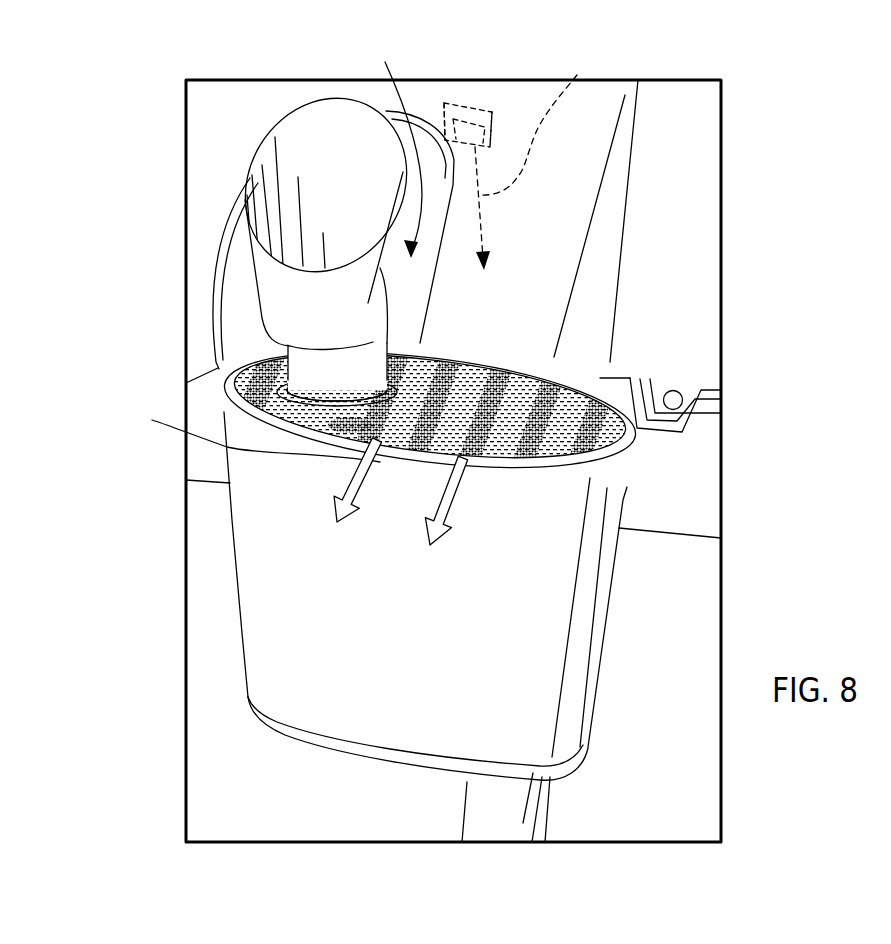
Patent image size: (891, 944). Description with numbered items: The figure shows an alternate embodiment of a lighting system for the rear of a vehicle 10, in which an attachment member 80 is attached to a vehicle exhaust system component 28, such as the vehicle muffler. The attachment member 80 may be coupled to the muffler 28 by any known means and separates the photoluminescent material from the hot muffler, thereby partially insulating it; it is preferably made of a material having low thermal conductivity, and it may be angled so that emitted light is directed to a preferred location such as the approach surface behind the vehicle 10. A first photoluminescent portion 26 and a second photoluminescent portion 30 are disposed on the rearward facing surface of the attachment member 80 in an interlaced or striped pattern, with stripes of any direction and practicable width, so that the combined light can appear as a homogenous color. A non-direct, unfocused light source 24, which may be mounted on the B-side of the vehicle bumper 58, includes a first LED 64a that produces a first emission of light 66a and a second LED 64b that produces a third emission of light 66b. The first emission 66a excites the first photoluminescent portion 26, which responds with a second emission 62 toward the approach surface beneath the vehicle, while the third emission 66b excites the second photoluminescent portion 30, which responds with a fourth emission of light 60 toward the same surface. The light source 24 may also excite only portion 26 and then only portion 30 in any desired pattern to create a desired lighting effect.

The vehicle 10 is at (152, 132).
The light source 24 is at (470, 96).
The first photoluminescent portion 26 is at (237, 388).
The vehicle exhaust system component 28 is at (262, 635).
The second photoluminescent portion 30 is at (543, 377).
The vehicle bumper 58 is at (203, 233).
The fourth emission of light 60 is at (445, 515).
The second emission 62 is at (333, 506).
The first LED 64a is at (445, 102).
The second LED 64b is at (495, 110).
The first emission of light 66a is at (389, 151).
The third emission of light 66b is at (535, 157).
The attachment member 80 is at (242, 362).